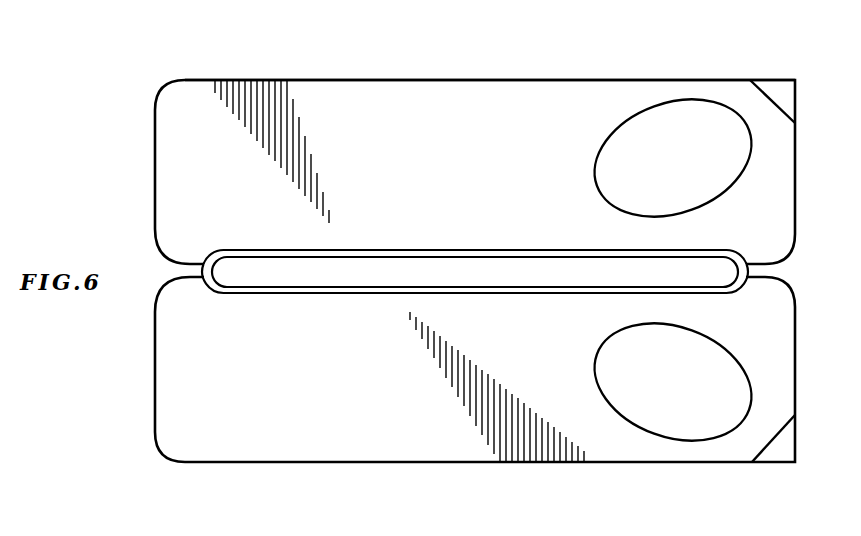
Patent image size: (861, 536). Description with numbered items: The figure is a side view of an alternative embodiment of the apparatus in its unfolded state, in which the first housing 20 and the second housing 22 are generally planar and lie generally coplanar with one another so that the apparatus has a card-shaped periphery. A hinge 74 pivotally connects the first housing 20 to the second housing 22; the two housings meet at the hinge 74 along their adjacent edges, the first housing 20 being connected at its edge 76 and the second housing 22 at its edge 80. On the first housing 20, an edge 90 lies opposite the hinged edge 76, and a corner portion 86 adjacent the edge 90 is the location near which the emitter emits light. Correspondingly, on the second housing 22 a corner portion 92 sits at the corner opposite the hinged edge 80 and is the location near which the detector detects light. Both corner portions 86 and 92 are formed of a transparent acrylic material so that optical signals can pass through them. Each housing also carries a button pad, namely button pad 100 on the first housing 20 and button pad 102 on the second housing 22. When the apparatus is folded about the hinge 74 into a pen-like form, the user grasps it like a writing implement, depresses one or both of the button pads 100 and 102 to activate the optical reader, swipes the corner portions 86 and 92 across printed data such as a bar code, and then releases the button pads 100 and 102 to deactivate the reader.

The first housing 20 is at (155, 117).
The second housing 22 is at (155, 382).
The hinge 74 is at (337, 280).
The edge 76 is at (509, 249).
The edge 80 is at (510, 296).
The corner portion 86 is at (790, 97).
The edge 90 is at (492, 79).
The corner portion 92 is at (788, 443).
The button pad 100 is at (687, 121).
The button pad 102 is at (703, 413).